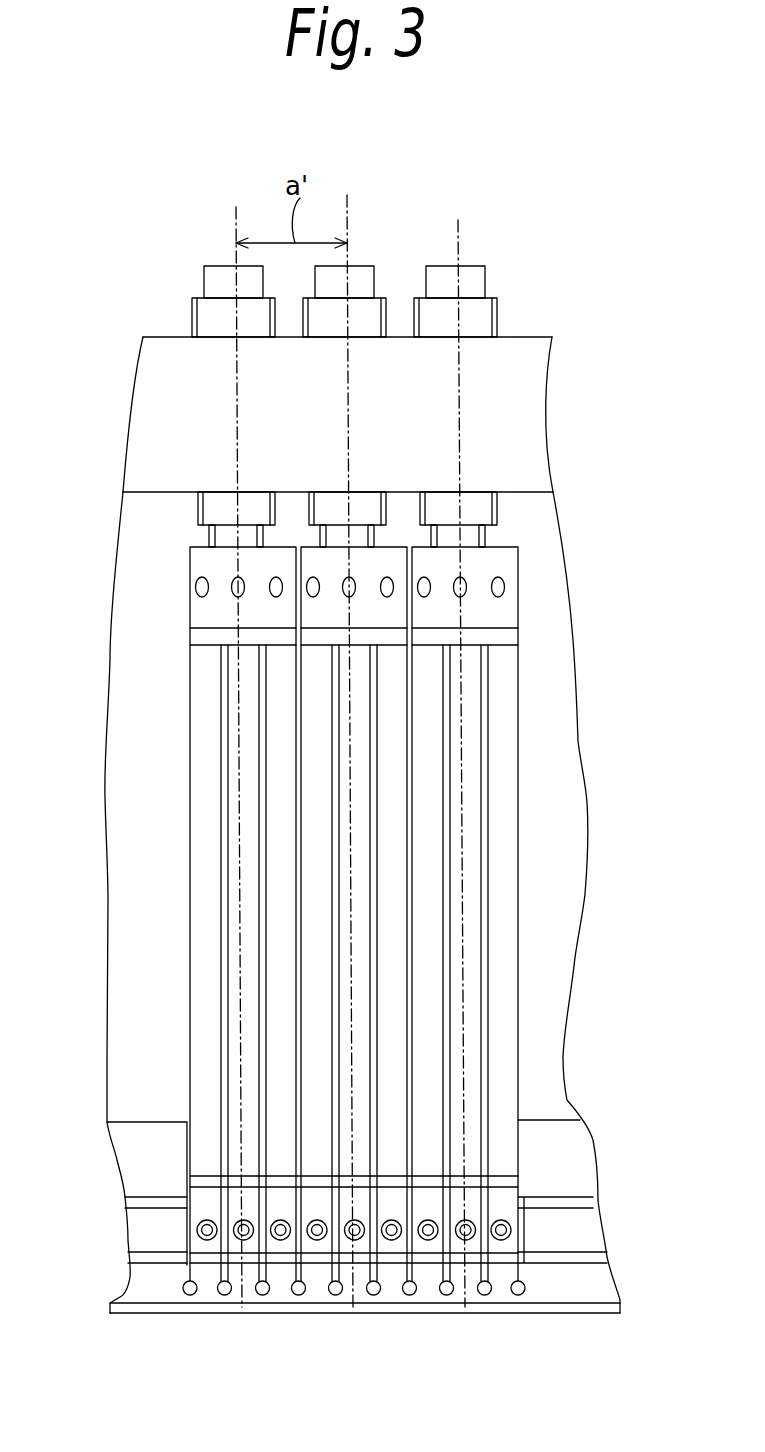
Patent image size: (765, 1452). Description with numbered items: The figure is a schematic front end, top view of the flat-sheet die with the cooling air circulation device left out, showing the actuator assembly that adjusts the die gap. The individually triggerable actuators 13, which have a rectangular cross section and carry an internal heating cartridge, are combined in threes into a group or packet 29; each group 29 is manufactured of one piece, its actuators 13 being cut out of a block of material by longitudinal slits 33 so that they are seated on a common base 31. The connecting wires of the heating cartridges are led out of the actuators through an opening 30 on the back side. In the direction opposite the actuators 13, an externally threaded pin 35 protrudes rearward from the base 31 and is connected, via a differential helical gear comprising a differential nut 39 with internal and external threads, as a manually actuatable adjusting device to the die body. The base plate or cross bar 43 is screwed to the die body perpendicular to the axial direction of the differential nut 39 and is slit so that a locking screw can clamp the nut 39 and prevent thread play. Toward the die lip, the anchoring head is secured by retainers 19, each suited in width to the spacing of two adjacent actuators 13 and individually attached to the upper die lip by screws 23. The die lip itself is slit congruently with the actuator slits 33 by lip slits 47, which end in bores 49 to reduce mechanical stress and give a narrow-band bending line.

The actuator 13 is at (275, 957).
The retainer 19 is at (203, 1202).
The screw 23 is at (188, 1229).
The group or packet of actuators 29 is at (344, 543).
The opening 30 is at (498, 587).
The base 31 is at (500, 617).
The longitudinal slit 33 is at (443, 983).
The threaded pin 35 is at (238, 537).
The differential nut 39 is at (375, 328).
The base plate or cross bar 43 is at (160, 337).
The lip slit 47 is at (445, 1207).
The bore 49 is at (225, 1300).